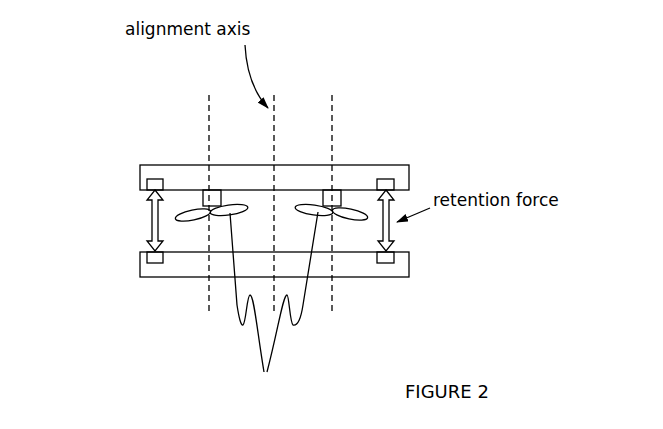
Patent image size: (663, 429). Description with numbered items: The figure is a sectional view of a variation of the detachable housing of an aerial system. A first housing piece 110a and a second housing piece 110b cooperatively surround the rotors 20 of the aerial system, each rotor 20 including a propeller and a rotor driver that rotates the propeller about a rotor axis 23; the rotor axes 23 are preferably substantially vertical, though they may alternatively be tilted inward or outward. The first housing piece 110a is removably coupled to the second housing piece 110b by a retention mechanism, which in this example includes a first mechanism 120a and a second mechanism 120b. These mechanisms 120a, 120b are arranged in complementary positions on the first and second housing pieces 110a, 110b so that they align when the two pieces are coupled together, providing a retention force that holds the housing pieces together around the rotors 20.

The rotor 20 is at (271, 297).
The rotor axis 23 is at (202, 138).
The first housing piece 110a is at (420, 165).
The second housing piece 110b is at (420, 262).
The first mechanism 120a is at (145, 196).
The second mechanism 120b is at (145, 257).